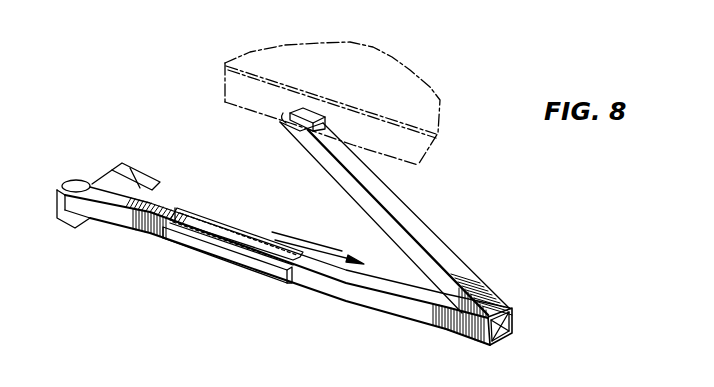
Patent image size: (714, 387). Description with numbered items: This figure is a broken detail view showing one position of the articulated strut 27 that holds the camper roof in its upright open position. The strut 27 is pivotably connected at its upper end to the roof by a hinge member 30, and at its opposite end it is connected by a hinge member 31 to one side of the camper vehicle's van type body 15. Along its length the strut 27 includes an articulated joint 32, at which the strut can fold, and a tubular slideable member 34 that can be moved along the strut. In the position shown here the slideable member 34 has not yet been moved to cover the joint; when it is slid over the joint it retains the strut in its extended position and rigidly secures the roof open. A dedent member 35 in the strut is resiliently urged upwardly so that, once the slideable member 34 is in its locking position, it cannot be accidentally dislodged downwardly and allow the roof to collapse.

The van type body 15 is at (122, 163).
The articulated strut 27 is at (415, 226).
The hinge member 30 is at (285, 118).
The hinge member 31 is at (74, 180).
The articulated joint 32 is at (510, 327).
The tubular slideable member 34 is at (205, 220).
The dedent member 35 is at (415, 300).